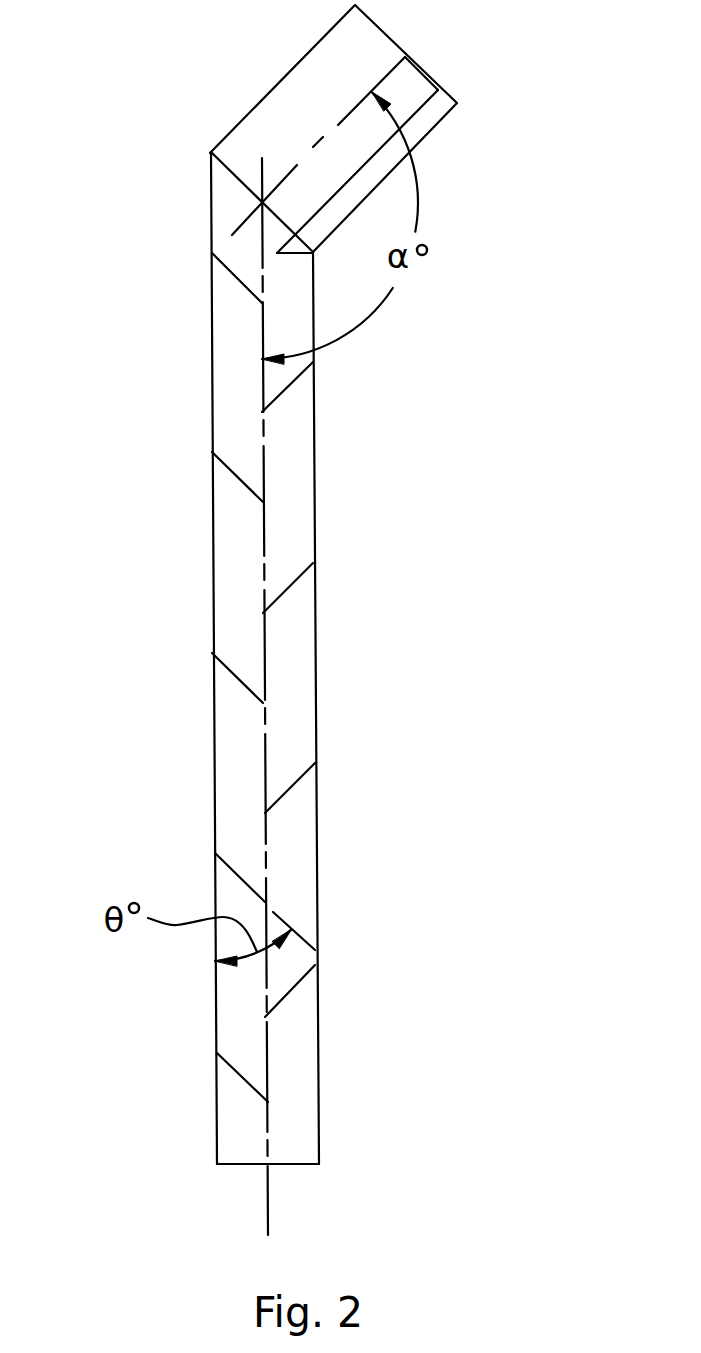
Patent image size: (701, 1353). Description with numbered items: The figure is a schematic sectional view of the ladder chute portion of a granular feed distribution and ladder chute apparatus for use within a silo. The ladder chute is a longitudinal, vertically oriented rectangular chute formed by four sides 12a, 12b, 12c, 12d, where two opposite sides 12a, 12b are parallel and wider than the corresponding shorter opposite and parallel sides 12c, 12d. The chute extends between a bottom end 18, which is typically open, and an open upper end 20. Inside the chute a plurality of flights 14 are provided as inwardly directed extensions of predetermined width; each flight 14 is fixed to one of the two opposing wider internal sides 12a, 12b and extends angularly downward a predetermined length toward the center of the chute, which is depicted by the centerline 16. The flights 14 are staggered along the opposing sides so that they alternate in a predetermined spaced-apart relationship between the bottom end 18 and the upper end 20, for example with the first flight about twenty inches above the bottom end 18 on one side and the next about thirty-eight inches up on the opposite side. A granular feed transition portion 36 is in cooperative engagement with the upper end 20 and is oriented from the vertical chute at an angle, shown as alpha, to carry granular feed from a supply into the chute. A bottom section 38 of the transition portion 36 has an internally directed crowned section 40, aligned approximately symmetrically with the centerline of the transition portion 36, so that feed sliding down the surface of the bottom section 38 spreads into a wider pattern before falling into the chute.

The side 12a is at (213, 583).
The side 12b is at (313, 635).
The side 12c is at (250, 447).
The side 12d is at (282, 548).
The flight 14 is at (238, 281).
The centerline 16 is at (268, 1195).
The bottom end 18 is at (298, 1132).
The upper end 20 is at (220, 213).
The granular feed transition portion 36 is at (257, 100).
The bottom section 38 is at (440, 122).
The crowned section 40 is at (418, 110).